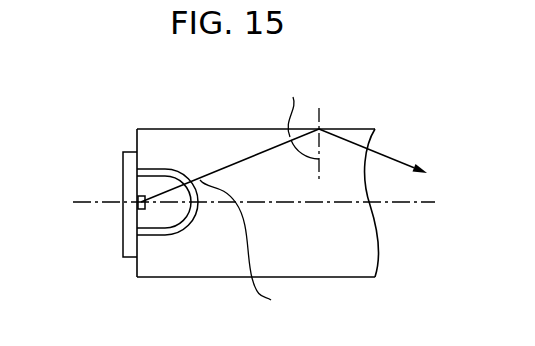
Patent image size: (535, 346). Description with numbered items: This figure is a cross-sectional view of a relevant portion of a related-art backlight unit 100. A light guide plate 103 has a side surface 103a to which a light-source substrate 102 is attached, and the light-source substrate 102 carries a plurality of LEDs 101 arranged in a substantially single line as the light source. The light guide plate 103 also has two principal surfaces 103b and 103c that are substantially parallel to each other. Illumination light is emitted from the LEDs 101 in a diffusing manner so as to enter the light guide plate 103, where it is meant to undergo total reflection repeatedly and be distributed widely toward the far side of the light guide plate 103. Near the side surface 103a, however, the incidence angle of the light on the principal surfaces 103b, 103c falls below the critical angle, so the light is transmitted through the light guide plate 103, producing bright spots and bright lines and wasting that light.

The backlight unit 100 is at (371, 70).
The LEDs 101 is at (148, 210).
The light-source substrate 102 is at (130, 237).
The light guide plate 103 is at (352, 277).
The side surface 103a is at (137, 133).
The principal surface 103b is at (173, 128).
The principal surface 103c is at (208, 277).